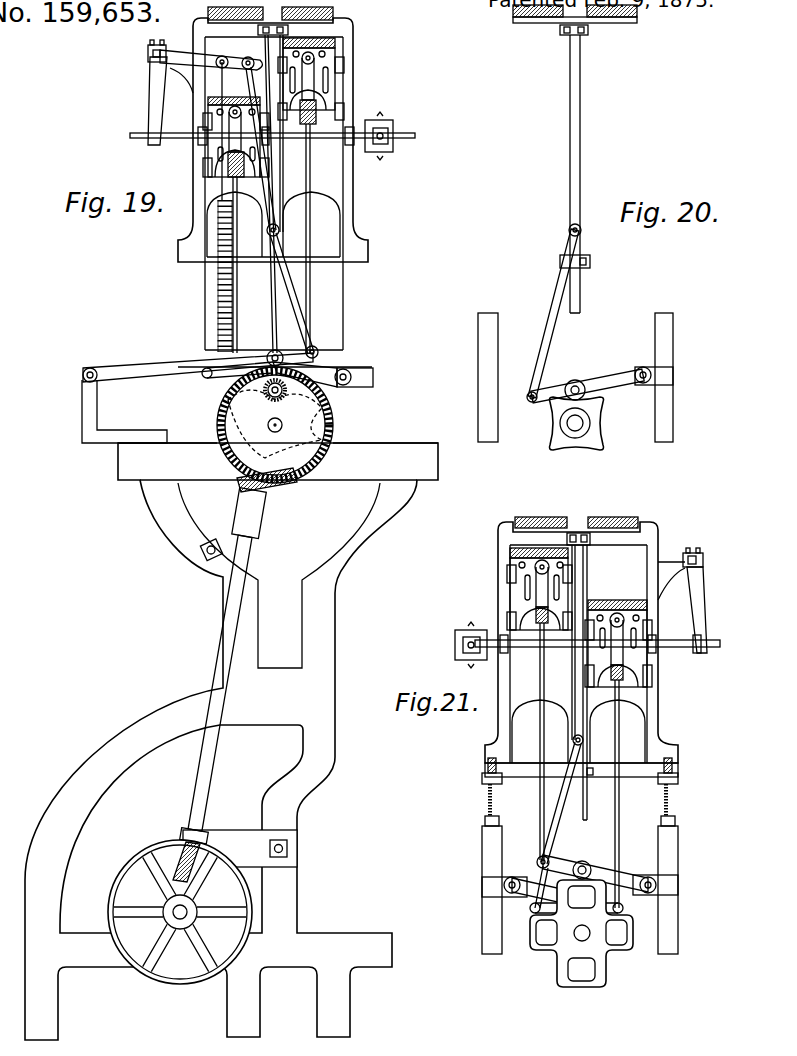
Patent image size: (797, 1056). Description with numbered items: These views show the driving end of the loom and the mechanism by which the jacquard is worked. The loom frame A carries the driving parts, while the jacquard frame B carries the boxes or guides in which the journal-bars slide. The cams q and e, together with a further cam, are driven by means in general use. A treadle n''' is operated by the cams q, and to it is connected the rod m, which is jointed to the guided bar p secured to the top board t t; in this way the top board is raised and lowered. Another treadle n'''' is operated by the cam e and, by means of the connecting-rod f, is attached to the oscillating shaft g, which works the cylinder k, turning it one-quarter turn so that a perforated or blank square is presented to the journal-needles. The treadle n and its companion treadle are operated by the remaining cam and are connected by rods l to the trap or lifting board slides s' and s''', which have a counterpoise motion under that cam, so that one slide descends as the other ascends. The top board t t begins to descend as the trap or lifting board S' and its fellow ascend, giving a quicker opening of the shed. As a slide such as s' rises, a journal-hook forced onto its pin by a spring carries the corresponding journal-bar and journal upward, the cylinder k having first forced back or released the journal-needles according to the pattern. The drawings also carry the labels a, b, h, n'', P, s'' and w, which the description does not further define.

In FIG. 19, the frame of the loom A is at (231, 741).
In FIG. 19, the frame of the jacquard B is at (271, 192).
In FIG. 21, the frame of the jacquard B is at (583, 738).
In FIG. 19, the connecting rod a is at (219, 685).
In FIG. 19, the crank / fly-wheel b is at (138, 886).
In FIG. 19, the cam e is at (275, 425).
In FIG. 19, the connecting-rod f is at (261, 158).
In FIG. 19, the oscillating shaft g is at (196, 92).
In FIG. 21, the oscillating shaft g is at (704, 600).
In FIG. 19, the shaft h is at (261, 139).
In FIG. 21, the shaft h is at (605, 645).
In FIG. 19, the cylinder k is at (395, 136).
In FIG. 21, the cylinder k is at (454, 643).
In FIG. 19, the rods l is at (310, 202).
In FIG. 21, the rods l is at (581, 734).
In FIG. 19, the rod m is at (294, 295).
In FIG. 20, the rod m is at (553, 315).
In FIG. 21, the rod m is at (561, 803).
In FIG. 19, the treadle n is at (287, 371).
In FIG. 21, the treadle n is at (607, 874).
In FIG. 21, the lever arm n'' is at (576, 889).
In FIG. 20, the treadle n''' is at (575, 377).
In FIG. 19, the treadle n'''' is at (197, 398).
In FIG. 21, the treadle n'''' is at (535, 887).
In FIG. 19, the guided bar p is at (278, 200).
In FIG. 21, the guided bar p is at (574, 682).
In FIG. 20, the rod P is at (569, 169).
In FIG. 20, the cams q is at (584, 424).
In FIG. 21, the cams q is at (581, 933).
In FIG. 19, the trap or lifting board slide s' is at (197, 229).
In FIG. 21, the trap or lifting board slide s' is at (634, 657).
In FIG. 19, the trap or lifting board S' is at (222, 135).
In FIG. 21, the trap or lifting board S' is at (632, 643).
In FIG. 21, the valve slide s'' is at (521, 589).
In FIG. 19, the trap or lifting board slide s''' is at (338, 77).
In FIG. 21, the trap or lifting board slide s''' is at (512, 593).
In FIG. 19, the top board t is at (206, 12).
In FIG. 20, the top board t is at (511, 12).
In FIG. 21, the top board t is at (576, 509).
In FIG. 19, the spring w is at (215, 207).